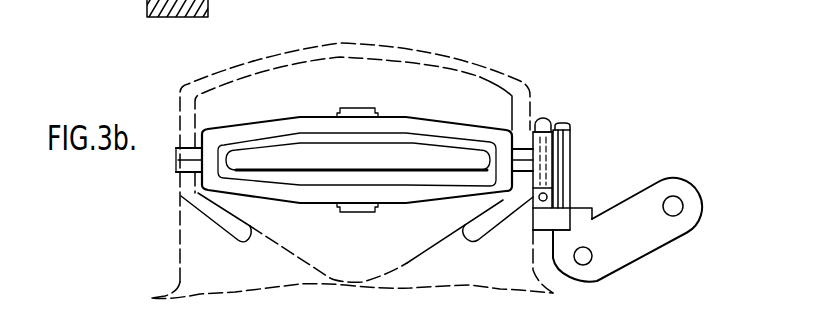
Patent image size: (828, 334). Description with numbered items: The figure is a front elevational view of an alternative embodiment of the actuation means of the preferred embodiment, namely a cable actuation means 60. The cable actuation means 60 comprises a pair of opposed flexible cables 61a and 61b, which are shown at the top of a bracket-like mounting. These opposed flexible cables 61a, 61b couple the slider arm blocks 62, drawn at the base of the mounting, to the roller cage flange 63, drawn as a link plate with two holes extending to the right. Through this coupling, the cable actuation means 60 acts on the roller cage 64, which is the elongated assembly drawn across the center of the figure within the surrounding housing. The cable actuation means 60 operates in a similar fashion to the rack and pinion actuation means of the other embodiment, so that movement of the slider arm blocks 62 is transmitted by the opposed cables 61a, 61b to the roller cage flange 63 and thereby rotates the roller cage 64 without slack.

The cable actuation means 60 is at (616, 156).
The flexible cable 61a is at (533, 138).
The flexible cable 61b is at (568, 130).
The slider arm blocks 62 is at (538, 221).
The roller cage flange 63 is at (674, 180).
The roller cage 64 is at (420, 126).